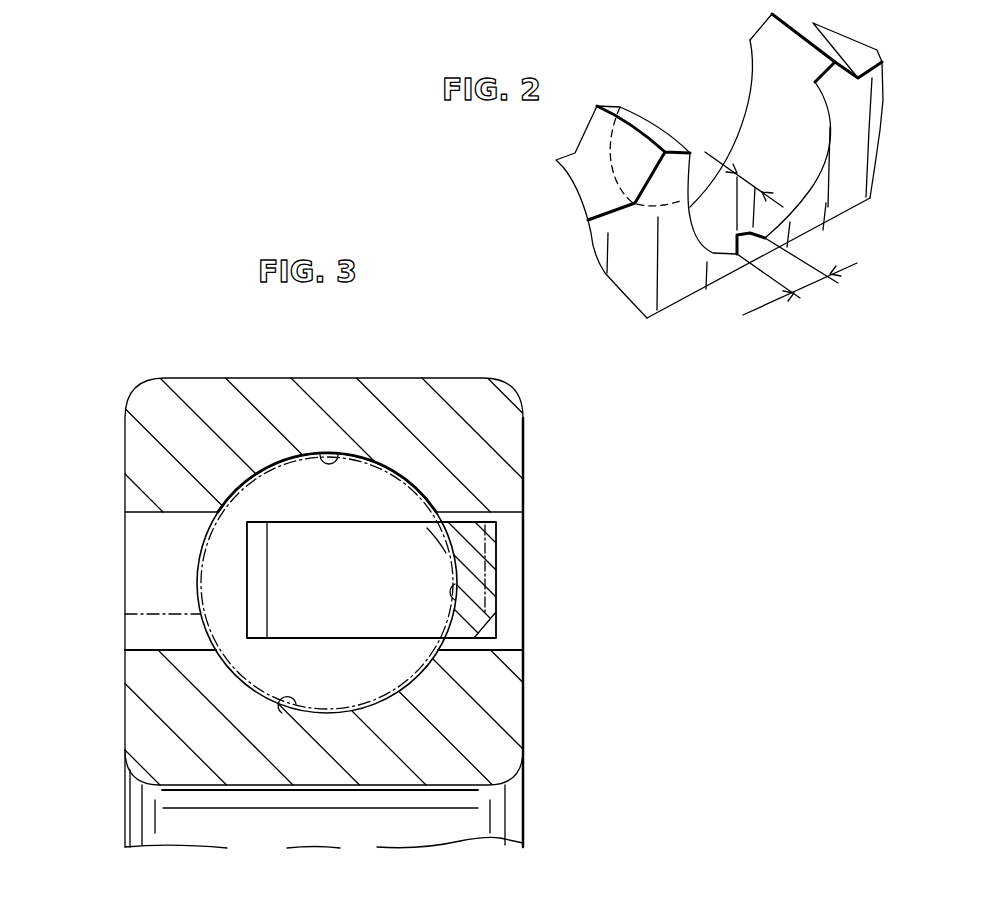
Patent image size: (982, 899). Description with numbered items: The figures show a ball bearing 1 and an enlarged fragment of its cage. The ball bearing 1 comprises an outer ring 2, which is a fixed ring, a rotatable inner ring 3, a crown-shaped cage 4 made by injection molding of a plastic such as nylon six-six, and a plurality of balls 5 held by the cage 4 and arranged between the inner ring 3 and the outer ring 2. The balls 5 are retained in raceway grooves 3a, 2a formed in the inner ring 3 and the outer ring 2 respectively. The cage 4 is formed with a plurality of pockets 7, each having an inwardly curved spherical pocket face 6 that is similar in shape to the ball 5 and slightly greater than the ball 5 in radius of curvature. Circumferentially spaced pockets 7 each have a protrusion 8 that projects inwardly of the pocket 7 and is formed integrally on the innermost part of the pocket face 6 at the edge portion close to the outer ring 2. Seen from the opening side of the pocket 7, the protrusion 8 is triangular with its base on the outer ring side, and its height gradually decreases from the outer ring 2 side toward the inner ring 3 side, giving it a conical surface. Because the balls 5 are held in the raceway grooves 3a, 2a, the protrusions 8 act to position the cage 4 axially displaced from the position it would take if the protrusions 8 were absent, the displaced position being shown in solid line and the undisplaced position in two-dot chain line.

In FIG. 3, the ball bearing 1 is at (126, 366).
In FIG. 3, the outer ring 2 is at (263, 392).
In FIG. 3, the raceway groove 2a is at (340, 453).
In FIG. 3, the inner ring 3 is at (333, 777).
In FIG. 3, the raceway groove 3a is at (293, 713).
In FIG. 2, the crown-shaped cage 4 is at (860, 142).
In FIG. 3, the crown-shaped cage 4 is at (485, 543).
In FIG. 3, the ball 5 is at (125, 614).
In FIG. 2, the spherical pocket face 6 is at (793, 173).
In FIG. 3, the spherical pocket face 6 is at (455, 582).
In FIG. 2, the pocket 7 is at (727, 128).
In FIG. 3, the pocket 7 is at (352, 623).
In FIG. 2, the protrusion 8 is at (733, 248).
In FIG. 3, the protrusion 8 is at (436, 529).